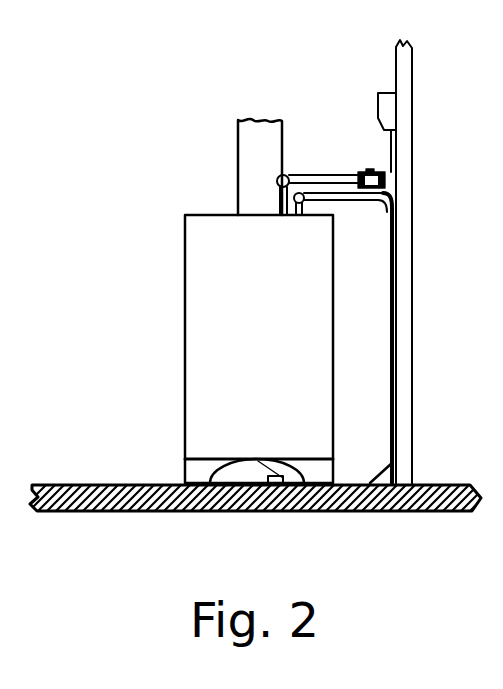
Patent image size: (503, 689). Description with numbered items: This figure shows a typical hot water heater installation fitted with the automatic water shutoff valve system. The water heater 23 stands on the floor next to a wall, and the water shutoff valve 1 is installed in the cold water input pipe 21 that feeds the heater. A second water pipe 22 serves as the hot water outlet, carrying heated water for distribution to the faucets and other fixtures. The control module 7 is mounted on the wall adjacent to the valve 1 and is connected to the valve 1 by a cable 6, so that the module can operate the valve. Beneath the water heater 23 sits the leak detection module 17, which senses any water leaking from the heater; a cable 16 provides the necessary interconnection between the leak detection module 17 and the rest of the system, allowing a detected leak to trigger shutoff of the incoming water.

The water shutoff valve 1 is at (360, 170).
The cable 6 is at (397, 153).
The control module 7 is at (378, 100).
The cable 16 is at (376, 481).
The leak detection module 17 is at (250, 460).
The cold water input pipe 21 is at (328, 176).
The water pipe 22 is at (340, 200).
The water heater 23 is at (185, 302).